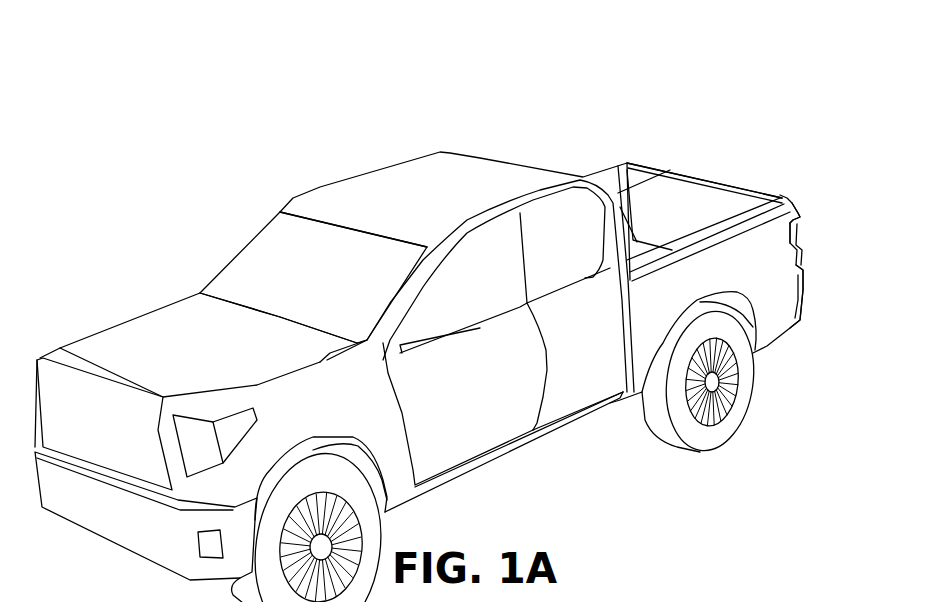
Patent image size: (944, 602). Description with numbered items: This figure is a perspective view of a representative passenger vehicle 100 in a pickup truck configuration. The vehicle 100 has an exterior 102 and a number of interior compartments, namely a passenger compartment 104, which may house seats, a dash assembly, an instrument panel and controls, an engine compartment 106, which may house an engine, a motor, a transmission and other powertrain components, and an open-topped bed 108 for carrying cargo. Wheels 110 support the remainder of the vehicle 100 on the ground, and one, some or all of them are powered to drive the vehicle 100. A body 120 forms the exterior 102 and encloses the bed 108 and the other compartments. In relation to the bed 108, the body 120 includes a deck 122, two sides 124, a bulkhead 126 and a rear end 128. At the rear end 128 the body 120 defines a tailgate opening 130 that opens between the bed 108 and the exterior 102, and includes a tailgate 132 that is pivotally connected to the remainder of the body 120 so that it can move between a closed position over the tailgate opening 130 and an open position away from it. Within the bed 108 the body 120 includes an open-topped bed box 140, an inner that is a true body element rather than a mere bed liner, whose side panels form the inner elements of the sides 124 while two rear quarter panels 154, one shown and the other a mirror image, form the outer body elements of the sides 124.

The vehicle 100 is at (455, 303).
The exterior 102 is at (488, 404).
The passenger compartment 104 is at (232, 288).
The engine compartment 106 is at (182, 313).
The bed 108 is at (645, 160).
The wheels 110 is at (742, 358).
The body 120 is at (747, 226).
The deck 122 is at (751, 283).
The sides 124 is at (743, 259).
The bulkhead 126 is at (798, 220).
The rear end 128 is at (803, 299).
The tailgate opening 130 is at (745, 186).
The tailgate 132 is at (780, 195).
The bed box 140 is at (685, 191).
The rear quarter panels 154 is at (753, 289).